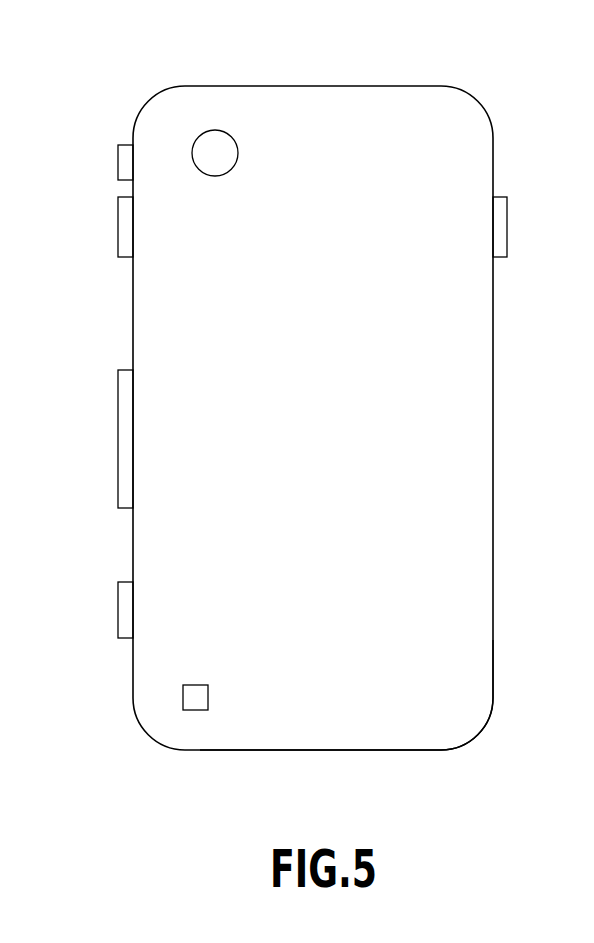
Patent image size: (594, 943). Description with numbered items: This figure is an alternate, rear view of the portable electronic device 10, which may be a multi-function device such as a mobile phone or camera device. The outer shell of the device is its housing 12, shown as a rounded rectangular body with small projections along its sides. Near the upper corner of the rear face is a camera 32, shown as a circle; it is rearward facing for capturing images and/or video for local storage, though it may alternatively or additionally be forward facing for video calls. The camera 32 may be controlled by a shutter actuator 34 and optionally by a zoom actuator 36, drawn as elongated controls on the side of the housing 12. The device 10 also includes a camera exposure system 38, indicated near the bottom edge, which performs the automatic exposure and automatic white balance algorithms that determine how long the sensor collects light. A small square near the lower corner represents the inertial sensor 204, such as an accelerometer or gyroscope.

The electronic device 10 is at (507, 86).
The housing 12 is at (494, 692).
The camera 32 is at (213, 145).
The shutter actuator 34 is at (118, 610).
The zoom actuator 36 is at (118, 432).
The camera exposure system 38 is at (270, 715).
The inertial sensor 204 is at (197, 700).